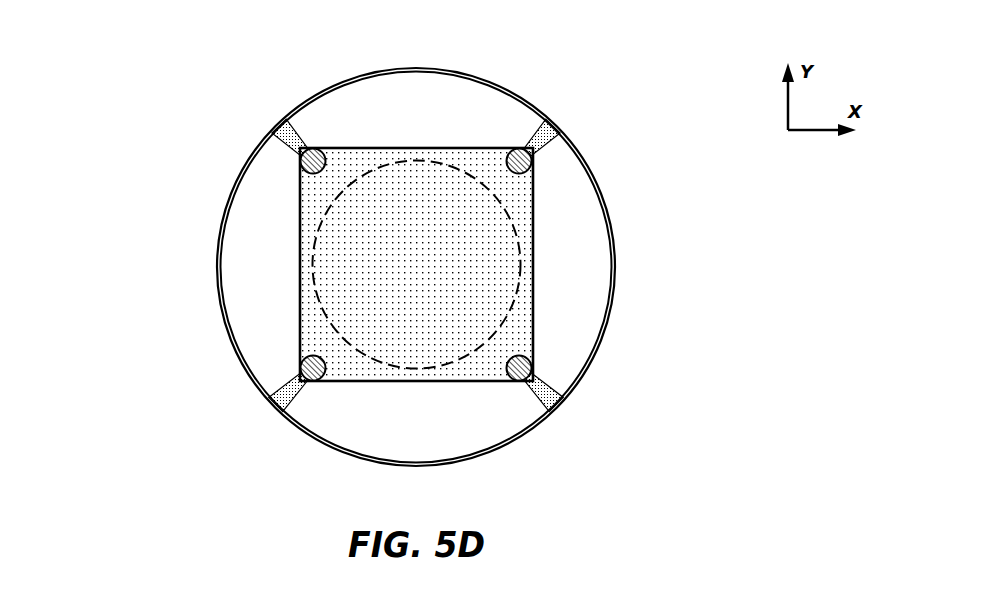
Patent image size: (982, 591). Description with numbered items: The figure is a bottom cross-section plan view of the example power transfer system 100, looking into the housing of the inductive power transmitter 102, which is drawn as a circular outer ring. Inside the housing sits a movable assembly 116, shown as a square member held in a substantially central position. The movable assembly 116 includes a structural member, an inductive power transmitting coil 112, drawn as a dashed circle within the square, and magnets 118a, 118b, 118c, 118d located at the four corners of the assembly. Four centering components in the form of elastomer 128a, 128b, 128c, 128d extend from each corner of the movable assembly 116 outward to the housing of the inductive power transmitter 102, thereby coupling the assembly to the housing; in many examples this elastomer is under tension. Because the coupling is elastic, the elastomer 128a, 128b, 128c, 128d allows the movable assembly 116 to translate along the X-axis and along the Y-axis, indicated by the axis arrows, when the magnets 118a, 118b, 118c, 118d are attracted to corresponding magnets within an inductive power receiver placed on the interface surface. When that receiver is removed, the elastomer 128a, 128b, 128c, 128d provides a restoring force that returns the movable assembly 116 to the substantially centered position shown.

The power transfer system 100 is at (95, 31).
The inductive power transmitter 102 is at (216, 266).
The inductive power transmitting coil 112 is at (534, 311).
The movable assembly 116 is at (534, 211).
The magnet 118a is at (299, 162).
The magnet 118b is at (299, 367).
The magnet 118c is at (533, 378).
The magnet 118d is at (533, 164).
The elastomer 128a is at (282, 124).
The elastomer 128b is at (273, 408).
The elastomer 128c is at (556, 409).
The elastomer 128d is at (548, 132).